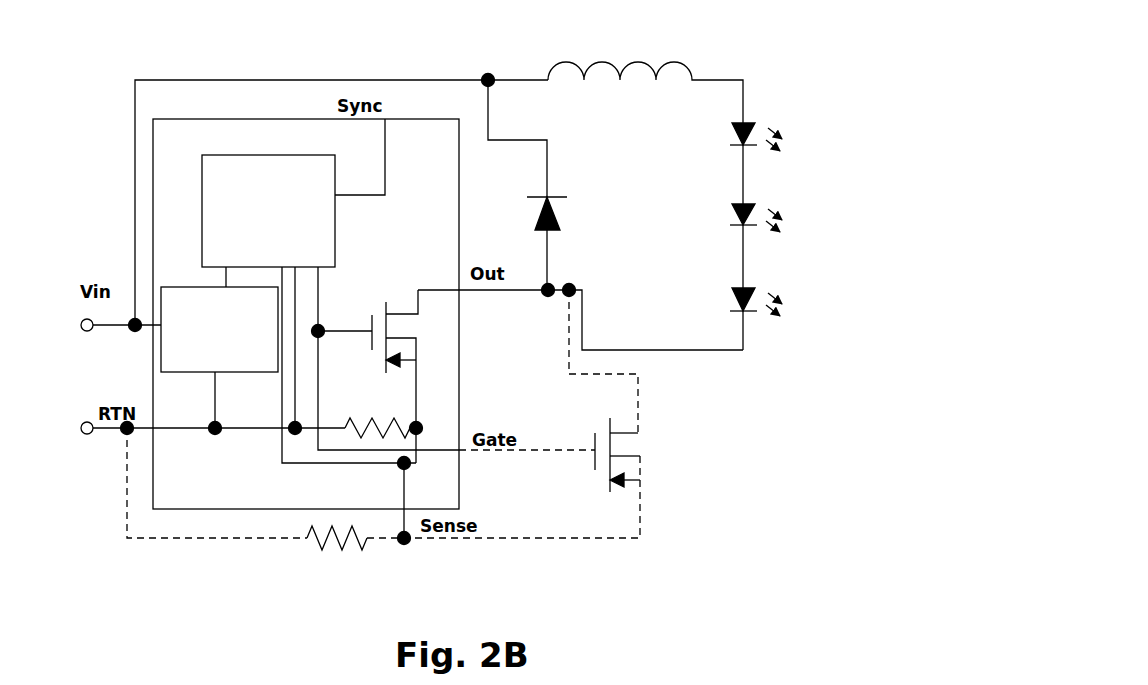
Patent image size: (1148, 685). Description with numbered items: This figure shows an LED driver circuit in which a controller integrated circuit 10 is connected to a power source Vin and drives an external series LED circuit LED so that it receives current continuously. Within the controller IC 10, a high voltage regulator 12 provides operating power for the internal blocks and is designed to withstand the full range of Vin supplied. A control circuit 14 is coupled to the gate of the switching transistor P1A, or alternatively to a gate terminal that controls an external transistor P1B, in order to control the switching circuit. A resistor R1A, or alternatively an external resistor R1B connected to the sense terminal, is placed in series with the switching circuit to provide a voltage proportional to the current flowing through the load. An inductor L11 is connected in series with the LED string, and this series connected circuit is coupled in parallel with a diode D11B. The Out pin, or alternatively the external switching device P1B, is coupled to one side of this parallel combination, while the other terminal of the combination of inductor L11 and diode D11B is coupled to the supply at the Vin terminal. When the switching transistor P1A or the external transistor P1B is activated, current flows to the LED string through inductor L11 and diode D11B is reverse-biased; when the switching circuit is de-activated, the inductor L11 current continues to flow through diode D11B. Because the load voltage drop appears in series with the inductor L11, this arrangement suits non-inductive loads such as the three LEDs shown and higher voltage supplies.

The controller integrated circuit 10 is at (306, 314).
The high voltage regulator 12 is at (219, 329).
The control circuit 14 is at (268, 211).
The switching transistor P1A is at (365, 365).
The external transistor P1B is at (668, 450).
The resistor R1A is at (384, 414).
The external resistor R1B is at (337, 552).
The inductor L11 is at (645, 93).
The diode D11B is at (524, 185).
The series LED circuit LED is at (813, 236).